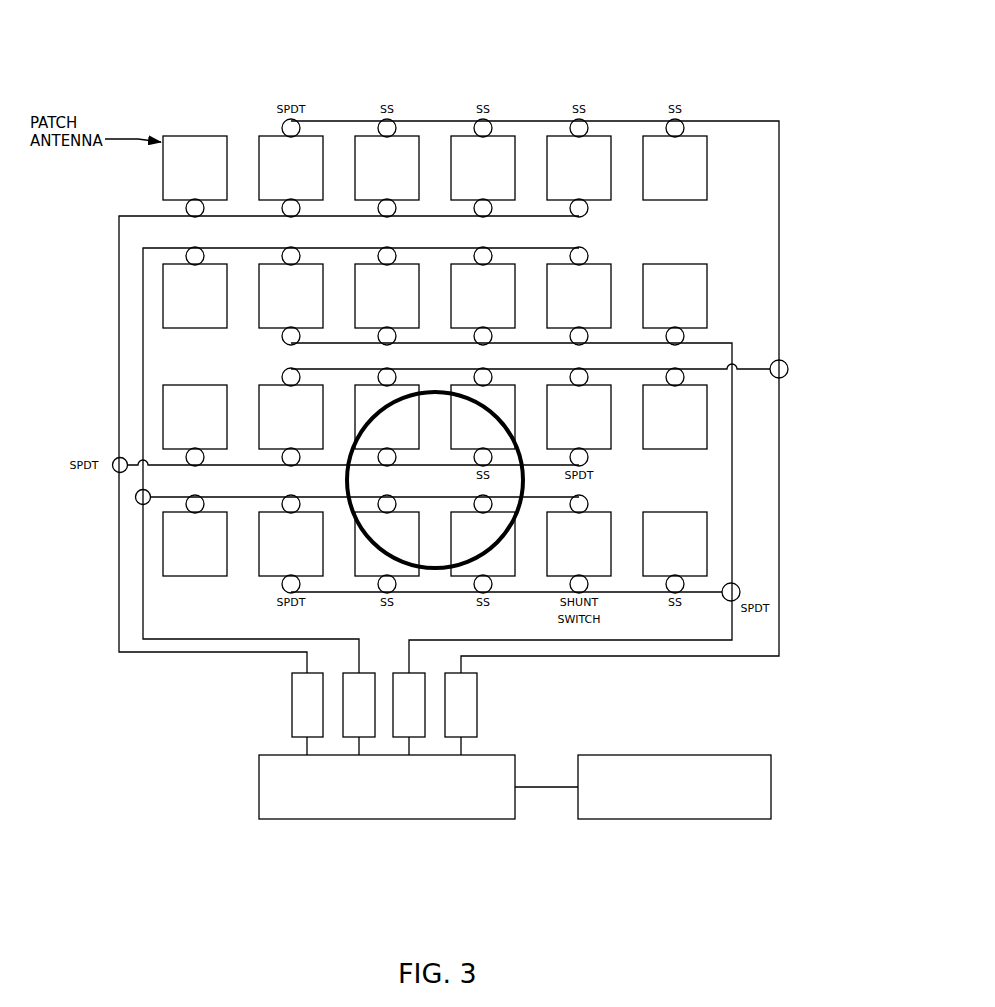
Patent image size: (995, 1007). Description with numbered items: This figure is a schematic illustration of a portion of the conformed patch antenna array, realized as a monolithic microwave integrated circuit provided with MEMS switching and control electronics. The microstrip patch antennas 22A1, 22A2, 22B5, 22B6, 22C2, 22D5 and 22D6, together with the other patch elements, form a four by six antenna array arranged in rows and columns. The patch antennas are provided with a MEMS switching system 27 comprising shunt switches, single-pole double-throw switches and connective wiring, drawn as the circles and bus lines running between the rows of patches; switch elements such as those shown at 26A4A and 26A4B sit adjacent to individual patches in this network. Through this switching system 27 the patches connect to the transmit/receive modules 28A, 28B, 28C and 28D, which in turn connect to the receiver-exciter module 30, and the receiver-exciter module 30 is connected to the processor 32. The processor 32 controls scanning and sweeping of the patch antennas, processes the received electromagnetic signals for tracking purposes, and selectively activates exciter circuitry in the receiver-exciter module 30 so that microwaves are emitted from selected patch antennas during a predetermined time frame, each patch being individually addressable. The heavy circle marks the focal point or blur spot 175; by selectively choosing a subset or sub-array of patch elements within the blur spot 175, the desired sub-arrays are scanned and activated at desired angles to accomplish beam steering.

The patch antenna 22A1 is at (248, 106).
The patch antenna 22A2 is at (355, 106).
The switch of antenna element row A column 4 26A4A is at (544, 106).
The switch of antenna element row B column 4 26A4B is at (611, 170).
The patch antenna 22B5 is at (725, 174).
The patch antenna 22B6 is at (769, 273).
The patch antenna 22C2 is at (184, 385).
The patch antenna 22D5 is at (727, 489).
The patch antenna 22D6 is at (775, 520).
The MEMS switching system 27 is at (800, 563).
The focal point or blur spot 175 is at (282, 518).
The transmit/receive module 28A is at (254, 714).
The transmit/receive module 28B is at (300, 684).
The transmit/receive module 28C is at (468, 684).
The transmit/receive module 28D is at (536, 714).
The receiver-exciter module 30 is at (418, 819).
The processor 32 is at (727, 754).